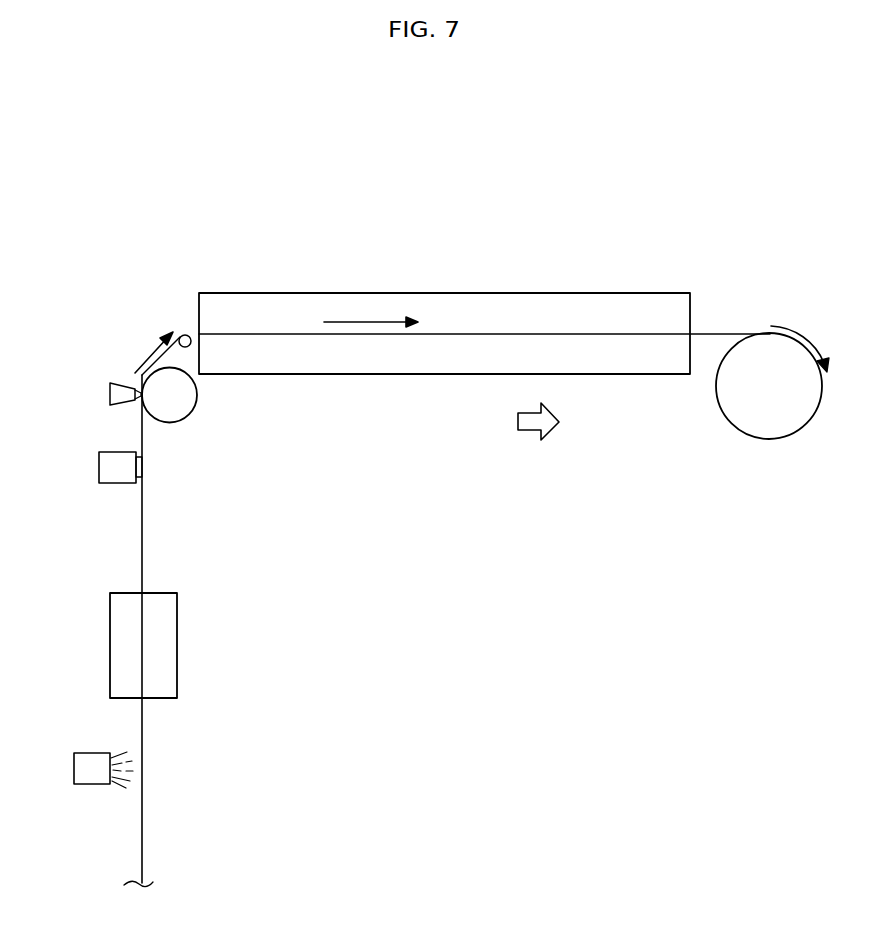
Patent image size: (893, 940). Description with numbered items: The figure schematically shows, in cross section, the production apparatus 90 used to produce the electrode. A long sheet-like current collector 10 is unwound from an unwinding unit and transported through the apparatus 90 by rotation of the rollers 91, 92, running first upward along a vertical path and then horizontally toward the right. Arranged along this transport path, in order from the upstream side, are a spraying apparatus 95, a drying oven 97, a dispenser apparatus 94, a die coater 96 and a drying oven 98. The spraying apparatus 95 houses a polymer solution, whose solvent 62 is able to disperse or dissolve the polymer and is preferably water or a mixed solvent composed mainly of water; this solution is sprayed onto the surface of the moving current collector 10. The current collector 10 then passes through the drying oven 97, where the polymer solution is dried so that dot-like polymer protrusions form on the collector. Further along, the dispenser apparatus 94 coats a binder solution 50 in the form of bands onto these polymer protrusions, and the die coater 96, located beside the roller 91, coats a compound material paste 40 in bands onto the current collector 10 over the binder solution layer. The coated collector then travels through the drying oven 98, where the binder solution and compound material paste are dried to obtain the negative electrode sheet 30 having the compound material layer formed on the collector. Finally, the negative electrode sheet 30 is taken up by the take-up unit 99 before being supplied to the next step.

The production apparatus 90 is at (658, 196).
The drying oven 98 is at (517, 293).
The negative electrode sheet 30 is at (722, 333).
The take-up unit 99 is at (770, 432).
The roller 92 is at (180, 335).
The roller 91 is at (178, 398).
The current collector 10 is at (142, 452).
The die coater 96 is at (110, 393).
The compound material paste 40 is at (134, 398).
The dispenser apparatus 94 is at (107, 480).
The binder solution 50 is at (137, 480).
The drying oven 97 is at (120, 642).
The spraying apparatus 95 is at (85, 780).
The solvent 62 is at (122, 777).